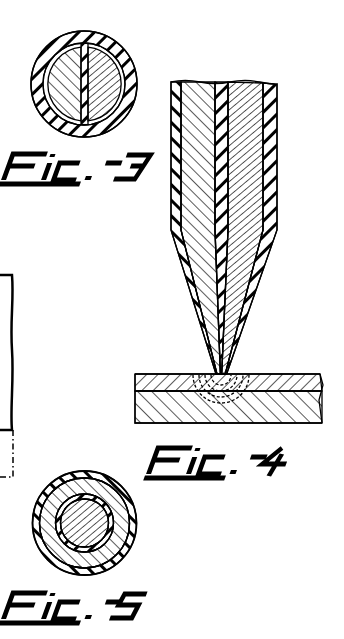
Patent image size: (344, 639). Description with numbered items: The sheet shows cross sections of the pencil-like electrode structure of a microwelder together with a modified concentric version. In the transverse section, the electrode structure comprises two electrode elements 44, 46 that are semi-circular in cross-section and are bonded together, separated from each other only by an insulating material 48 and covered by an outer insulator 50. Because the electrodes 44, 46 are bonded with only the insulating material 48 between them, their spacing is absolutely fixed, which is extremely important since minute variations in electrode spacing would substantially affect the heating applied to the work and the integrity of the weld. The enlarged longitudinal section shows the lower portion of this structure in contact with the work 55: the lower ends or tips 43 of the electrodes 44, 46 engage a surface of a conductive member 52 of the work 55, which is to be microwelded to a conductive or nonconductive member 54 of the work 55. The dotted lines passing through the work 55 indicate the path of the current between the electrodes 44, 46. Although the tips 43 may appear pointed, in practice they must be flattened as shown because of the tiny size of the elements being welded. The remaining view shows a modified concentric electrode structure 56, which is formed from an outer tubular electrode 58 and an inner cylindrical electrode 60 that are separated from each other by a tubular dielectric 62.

In FIG. 4, the lower ends or tips 43 is at (198, 324).
In FIG. 3, the electrode element 44 is at (72, 90).
In FIG. 4, the electrode element 44 is at (208, 156).
In FIG. 3, the electrode element 46 is at (114, 90).
In FIG. 4, the electrode element 46 is at (256, 156).
In FIG. 3, the insulating material 48 is at (85, 43).
In FIG. 4, the insulating material 48 is at (218, 84).
In FIG. 3, the insulator 50 is at (67, 35).
In FIG. 4, the insulator 50 is at (171, 150).
In FIG. 4, the conductive member 52 is at (258, 374).
In FIG. 4, the conductive or nonconductive member 54 is at (293, 413).
In FIG. 4, the work 55 is at (167, 373).
In FIG. 5, the electrode structure 56 is at (71, 472).
In FIG. 5, the outer tubular electrode 58 is at (95, 487).
In FIG. 5, the inner cylindrical electrode 60 is at (93, 530).
In FIG. 5, the tubular dielectric 62 is at (40, 499).